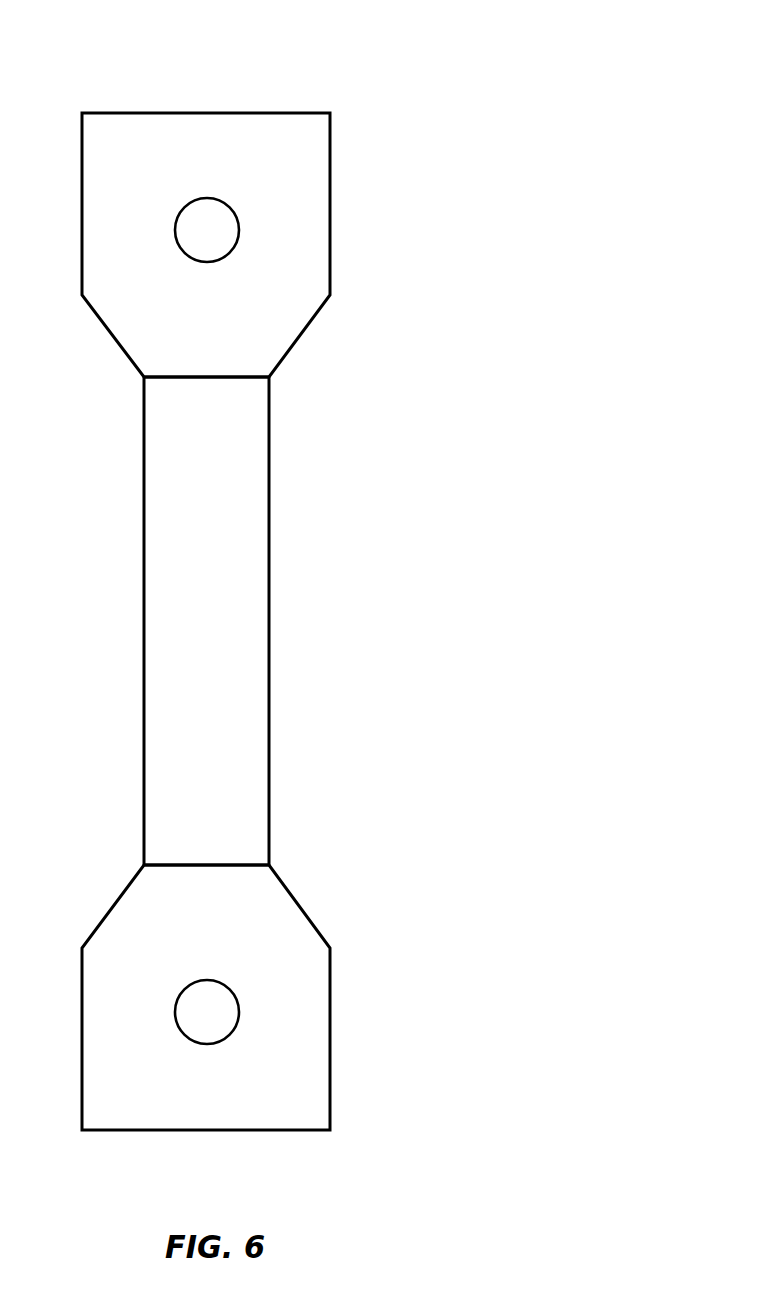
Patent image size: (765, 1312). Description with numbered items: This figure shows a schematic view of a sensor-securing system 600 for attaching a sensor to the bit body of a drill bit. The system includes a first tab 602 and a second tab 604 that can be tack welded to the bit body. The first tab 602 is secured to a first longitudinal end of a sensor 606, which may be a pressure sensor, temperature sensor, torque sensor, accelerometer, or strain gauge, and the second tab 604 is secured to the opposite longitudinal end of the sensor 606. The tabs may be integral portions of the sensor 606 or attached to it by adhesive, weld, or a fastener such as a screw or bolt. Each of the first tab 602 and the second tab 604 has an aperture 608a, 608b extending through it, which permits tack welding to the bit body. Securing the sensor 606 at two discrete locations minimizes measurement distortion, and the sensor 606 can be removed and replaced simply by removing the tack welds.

The sensor-securing system 600 is at (347, 579).
The first tab 602 is at (302, 968).
The second tab 604 is at (308, 211).
The sensor 606 is at (245, 590).
The aperture 608a is at (208, 197).
The aperture 608b is at (239, 1012).